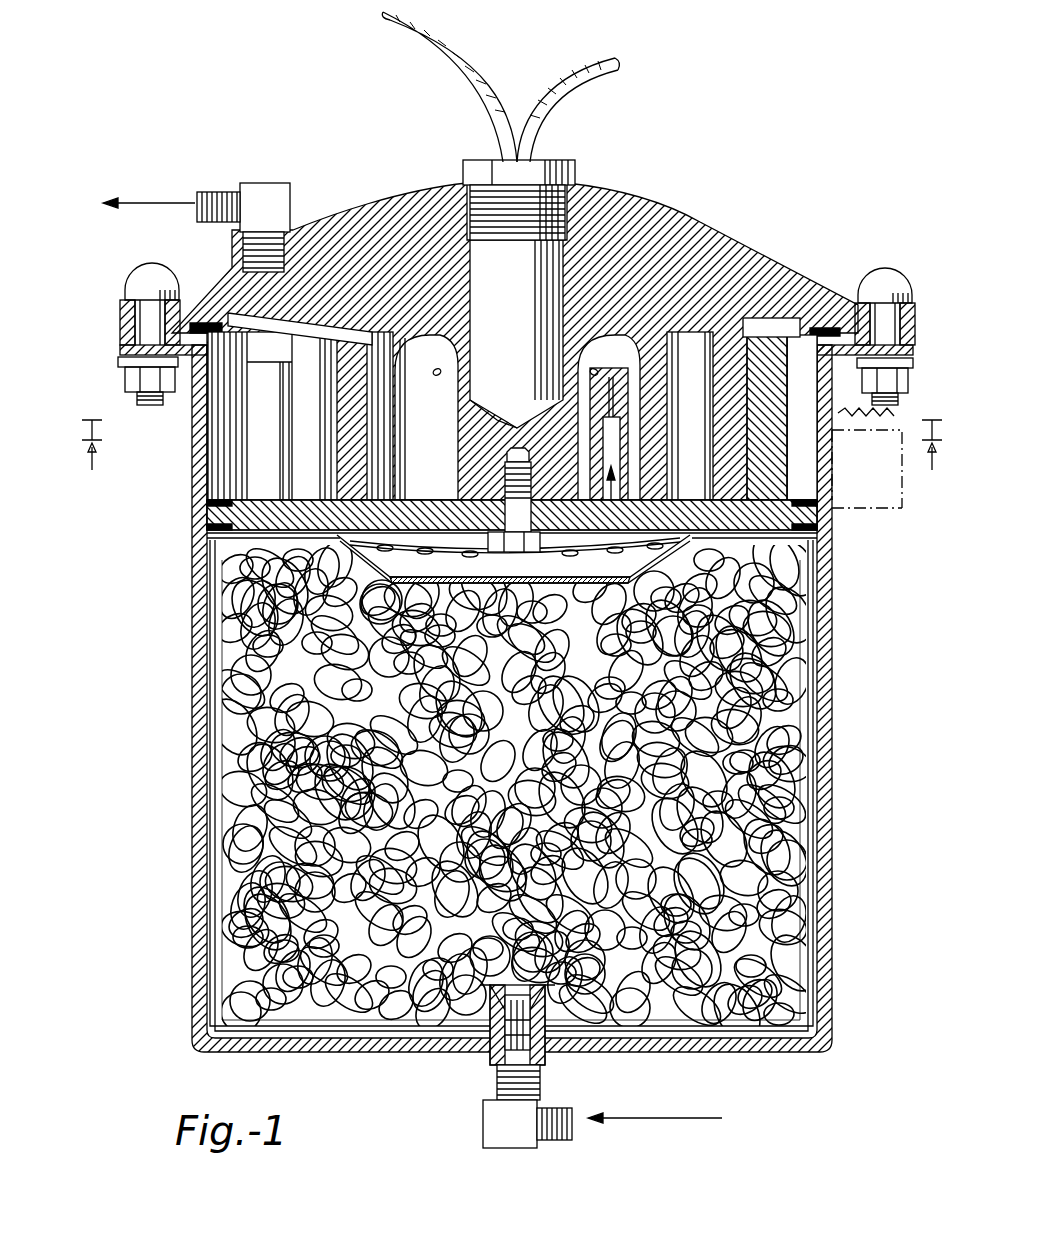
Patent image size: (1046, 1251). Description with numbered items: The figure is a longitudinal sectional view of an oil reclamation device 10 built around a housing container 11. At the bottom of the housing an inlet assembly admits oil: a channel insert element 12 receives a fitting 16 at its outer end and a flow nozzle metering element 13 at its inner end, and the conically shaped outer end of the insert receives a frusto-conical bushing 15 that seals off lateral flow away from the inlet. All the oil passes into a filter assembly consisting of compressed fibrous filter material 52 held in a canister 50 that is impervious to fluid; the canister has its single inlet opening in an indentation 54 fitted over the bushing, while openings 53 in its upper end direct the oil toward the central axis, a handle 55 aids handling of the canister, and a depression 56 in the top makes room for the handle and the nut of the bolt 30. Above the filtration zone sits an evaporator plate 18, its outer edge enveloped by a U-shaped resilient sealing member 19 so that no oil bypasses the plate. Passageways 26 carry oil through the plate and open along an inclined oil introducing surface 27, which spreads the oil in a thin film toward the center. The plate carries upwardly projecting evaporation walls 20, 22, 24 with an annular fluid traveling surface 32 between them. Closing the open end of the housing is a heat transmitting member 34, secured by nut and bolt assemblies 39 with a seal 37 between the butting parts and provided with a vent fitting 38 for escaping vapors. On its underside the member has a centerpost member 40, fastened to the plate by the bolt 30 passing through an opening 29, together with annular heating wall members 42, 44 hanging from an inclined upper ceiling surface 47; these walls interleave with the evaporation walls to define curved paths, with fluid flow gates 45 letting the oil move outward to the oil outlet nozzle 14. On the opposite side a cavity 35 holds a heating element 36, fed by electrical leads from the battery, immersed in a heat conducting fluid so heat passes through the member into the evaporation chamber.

The reclamation device 10 is at (770, 142).
The housing container 11 is at (198, 700).
The channel insert element 12 is at (478, 1074).
The flow nozzle metering element 13 is at (523, 1037).
The oil outlet nozzle 14 is at (880, 520).
The frusto-conical bushing 15 is at (478, 1024).
The fitting 16 is at (515, 1127).
The evaporator plate 18 is at (242, 508).
The sealing member 19 is at (203, 535).
The innermost annular evaporation wall 20 is at (628, 460).
The evaporation wall 22 is at (340, 423).
The evaporation wall 24 is at (263, 395).
The passageways 26 is at (597, 370).
The oil introducing surface 27 is at (423, 370).
The opening 29 is at (500, 508).
The bolt 30 is at (507, 473).
The fluid traveling surface 32 is at (653, 487).
The heat transmitting member 34 is at (638, 210).
The cavity 35 is at (477, 263).
The heating element 36 is at (530, 172).
The seal 37 is at (201, 326).
The vent fitting 38 is at (273, 182).
The nut and bolt assemblies 39 is at (127, 280).
The heat transmitting centerpost member 40 is at (458, 423).
The heating wall member 42 is at (380, 447).
The heating wall member 44 is at (300, 402).
The fluid flow gates 45 is at (730, 495).
The upper ceiling surface 47 is at (318, 330).
The canister 50 is at (212, 866).
The compressed fibrous filter material 52 is at (775, 838).
The openings 53 is at (457, 563).
The indentation 54 is at (583, 1010).
The handle 55 is at (627, 547).
The depression 56 is at (588, 578).